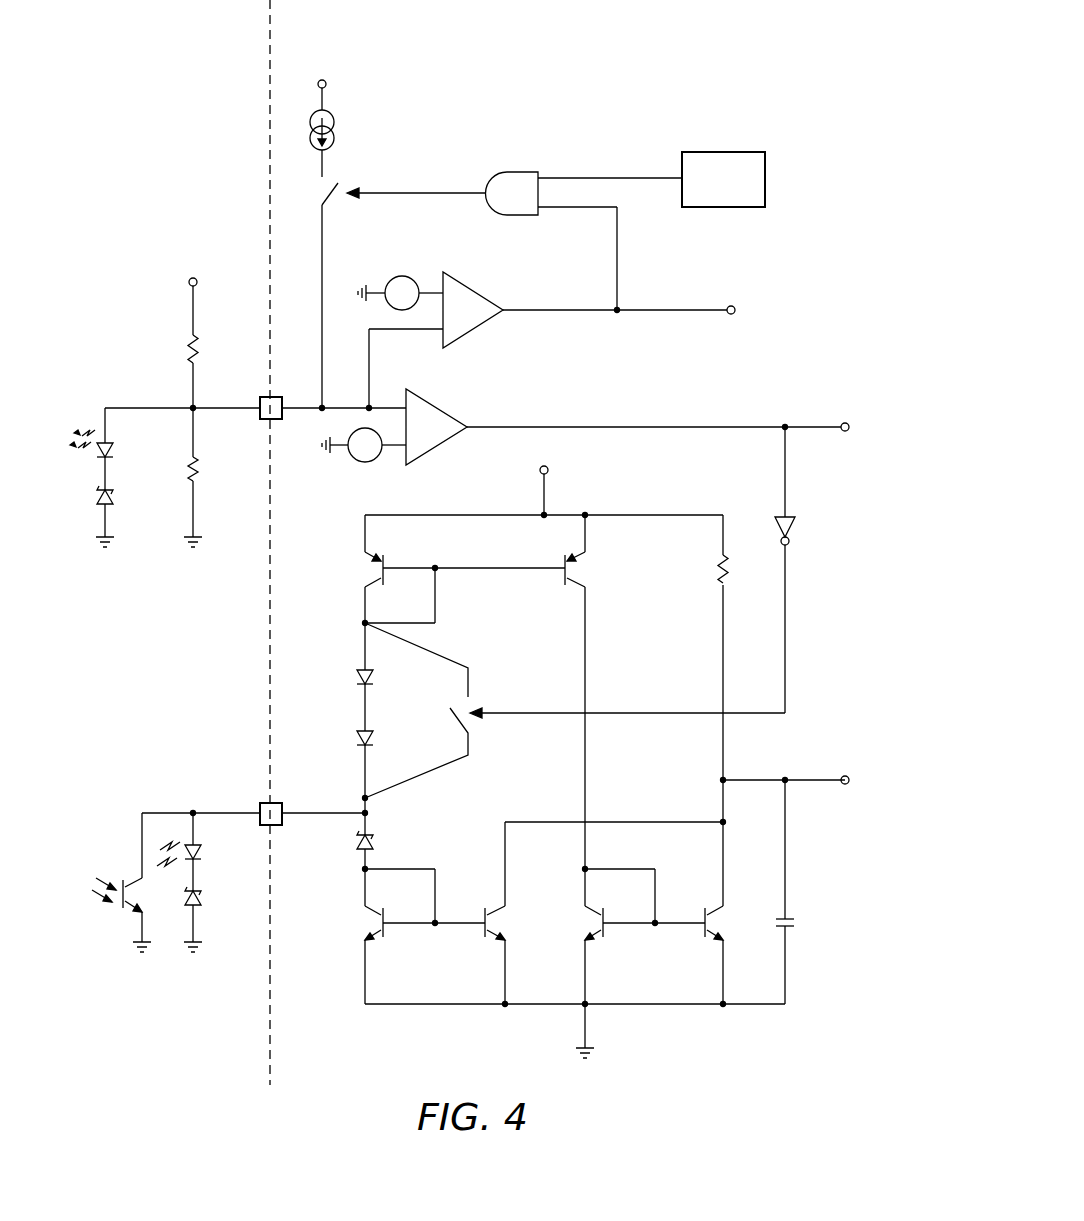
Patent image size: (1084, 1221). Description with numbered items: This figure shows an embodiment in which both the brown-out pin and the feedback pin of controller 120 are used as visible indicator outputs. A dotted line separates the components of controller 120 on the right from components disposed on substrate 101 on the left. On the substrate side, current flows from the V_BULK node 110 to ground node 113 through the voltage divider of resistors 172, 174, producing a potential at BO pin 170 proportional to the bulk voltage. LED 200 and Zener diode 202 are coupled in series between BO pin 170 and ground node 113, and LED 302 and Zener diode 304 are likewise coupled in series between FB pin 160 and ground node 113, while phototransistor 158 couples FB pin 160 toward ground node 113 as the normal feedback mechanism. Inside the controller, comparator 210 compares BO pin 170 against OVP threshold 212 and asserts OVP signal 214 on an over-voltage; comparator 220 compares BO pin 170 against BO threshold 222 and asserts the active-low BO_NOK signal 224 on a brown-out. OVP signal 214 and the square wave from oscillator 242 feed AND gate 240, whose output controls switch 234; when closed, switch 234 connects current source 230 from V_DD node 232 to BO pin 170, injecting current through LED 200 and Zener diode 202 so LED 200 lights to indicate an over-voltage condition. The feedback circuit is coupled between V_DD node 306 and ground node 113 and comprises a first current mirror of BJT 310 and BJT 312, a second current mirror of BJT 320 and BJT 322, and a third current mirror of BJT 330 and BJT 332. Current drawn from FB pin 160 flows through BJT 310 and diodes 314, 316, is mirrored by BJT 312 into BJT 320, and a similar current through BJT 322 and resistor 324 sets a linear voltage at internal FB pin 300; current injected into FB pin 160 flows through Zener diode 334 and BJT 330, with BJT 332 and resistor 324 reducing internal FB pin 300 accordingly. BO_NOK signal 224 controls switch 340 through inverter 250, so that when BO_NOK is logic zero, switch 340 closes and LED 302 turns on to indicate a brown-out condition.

The substrate 101 is at (224, 30).
The controller 120 is at (347, 30).
The V_BULK node 110 is at (189, 285).
The ground node 113 is at (108, 549).
The phototransistor 158 is at (128, 882).
The feedback (FB) pin 160 is at (283, 805).
The BO pin 170 is at (262, 398).
The resistor 172 is at (189, 348).
The resistor 174 is at (198, 470).
The LED 200 is at (113, 452).
The Zener diode 202 is at (113, 500).
The comparator 210 is at (485, 294).
The OVP voltage threshold 212 is at (404, 276).
The OVP signal 214 is at (735, 306).
The comparator 220 is at (446, 413).
The BO threshold voltage 222 is at (367, 464).
The BO_NOK signal 224 is at (849, 423).
The current source 230 is at (334, 144).
The V_DD node 232 is at (327, 87).
The switch 234 is at (318, 191).
The AND gate 240 is at (514, 171).
The oscillator 242 is at (724, 152).
The inverter 250 is at (796, 532).
The internal FB pin 300 is at (849, 777).
The LED 302 is at (203, 852).
The Zener diode 304 is at (203, 898).
The V_DD node 306 is at (550, 472).
The BJT 310 is at (388, 565).
The BJT 312 is at (560, 565).
The diode 314 is at (358, 672).
The diode 316 is at (358, 733).
The BJT 320 is at (606, 935).
The BJT 322 is at (700, 912).
The resistor 324 is at (718, 572).
The BJT 330 is at (388, 935).
The BJT 332 is at (480, 912).
The Zener diode 334 is at (376, 838).
The switch 340 is at (472, 700).